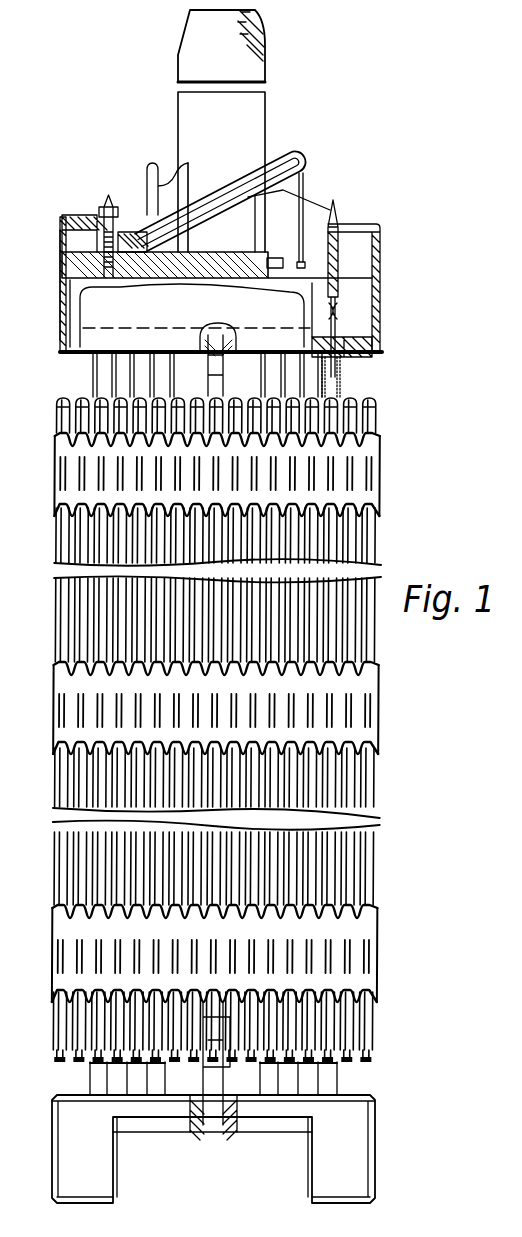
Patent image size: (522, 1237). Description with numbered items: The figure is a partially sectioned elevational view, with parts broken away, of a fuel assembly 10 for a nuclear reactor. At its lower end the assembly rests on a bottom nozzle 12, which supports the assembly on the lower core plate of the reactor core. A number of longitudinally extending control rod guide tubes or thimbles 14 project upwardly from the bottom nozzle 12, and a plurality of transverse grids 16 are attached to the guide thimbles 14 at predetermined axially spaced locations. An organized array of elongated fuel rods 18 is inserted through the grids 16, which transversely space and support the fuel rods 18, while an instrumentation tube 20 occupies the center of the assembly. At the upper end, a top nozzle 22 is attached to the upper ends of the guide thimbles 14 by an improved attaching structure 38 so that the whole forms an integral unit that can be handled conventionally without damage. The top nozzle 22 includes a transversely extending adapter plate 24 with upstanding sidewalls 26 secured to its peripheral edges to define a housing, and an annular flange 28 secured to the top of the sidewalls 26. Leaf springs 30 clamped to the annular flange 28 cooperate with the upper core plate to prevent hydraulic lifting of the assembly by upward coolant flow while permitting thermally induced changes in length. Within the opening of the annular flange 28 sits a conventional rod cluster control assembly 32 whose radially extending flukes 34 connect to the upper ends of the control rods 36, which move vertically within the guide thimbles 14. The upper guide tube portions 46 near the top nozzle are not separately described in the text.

The fuel assembly 10 is at (406, 525).
The bottom nozzle 12 is at (357, 1153).
The control rod guide tubes or thimbles 14 is at (88, 1080).
The transverse grids 16 is at (381, 472).
The fuel rods 18 is at (58, 418).
The instrumentation tube 20 is at (212, 1105).
The top nozzle 22 is at (392, 232).
The adapter plate 24 is at (367, 357).
The sidewalls 26 is at (62, 292).
The annular flange 28 is at (62, 222).
The leaf springs 30 is at (285, 150).
The rod cluster control assembly 32 is at (268, 70).
The flukes 34 is at (315, 200).
The control rods 36 is at (335, 325).
The attaching structure 38 is at (359, 369).
The upper guide tubes 46 is at (93, 363).